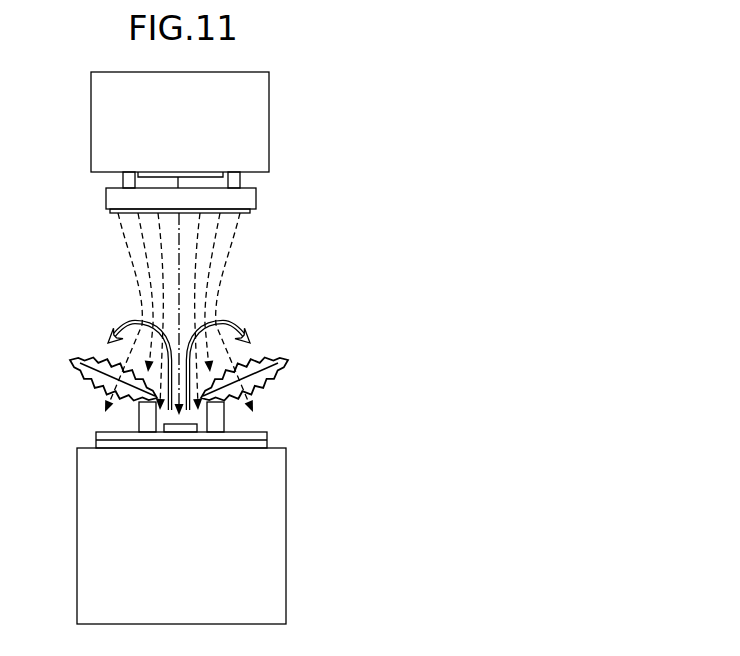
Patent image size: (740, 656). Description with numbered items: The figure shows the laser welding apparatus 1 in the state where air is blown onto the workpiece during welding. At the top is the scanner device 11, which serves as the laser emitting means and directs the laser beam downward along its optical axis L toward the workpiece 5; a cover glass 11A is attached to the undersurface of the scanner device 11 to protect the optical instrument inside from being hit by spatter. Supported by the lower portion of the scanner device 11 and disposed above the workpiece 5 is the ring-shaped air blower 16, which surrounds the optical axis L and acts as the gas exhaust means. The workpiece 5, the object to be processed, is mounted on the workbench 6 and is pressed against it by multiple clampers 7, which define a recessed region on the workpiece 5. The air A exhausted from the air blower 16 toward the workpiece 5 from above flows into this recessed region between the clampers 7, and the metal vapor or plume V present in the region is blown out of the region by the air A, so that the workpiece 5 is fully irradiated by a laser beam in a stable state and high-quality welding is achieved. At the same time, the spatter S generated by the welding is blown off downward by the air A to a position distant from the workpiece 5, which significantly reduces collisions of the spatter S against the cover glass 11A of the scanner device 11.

The laser welding apparatus 1 is at (390, 100).
The scanner device 11 is at (91, 113).
The cover glass 11A is at (122, 180).
The air blower 16 is at (256, 198).
The air A is at (135, 258).
The optical axis L is at (182, 233).
The spatter S is at (130, 323).
The metal vapor (plume) V is at (80, 352).
The clampers 7 is at (140, 422).
The workpiece 5 is at (268, 433).
The workbench 6 is at (287, 533).